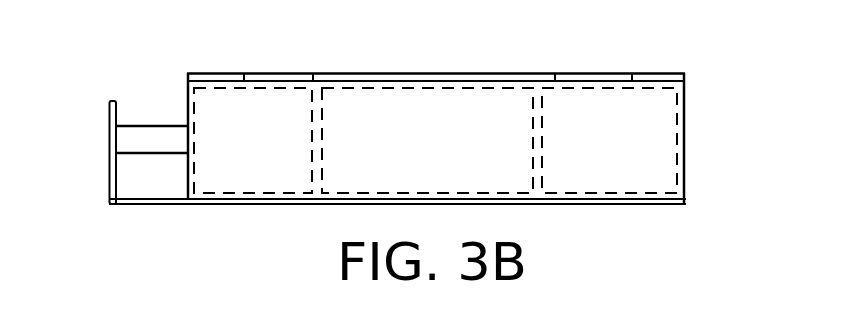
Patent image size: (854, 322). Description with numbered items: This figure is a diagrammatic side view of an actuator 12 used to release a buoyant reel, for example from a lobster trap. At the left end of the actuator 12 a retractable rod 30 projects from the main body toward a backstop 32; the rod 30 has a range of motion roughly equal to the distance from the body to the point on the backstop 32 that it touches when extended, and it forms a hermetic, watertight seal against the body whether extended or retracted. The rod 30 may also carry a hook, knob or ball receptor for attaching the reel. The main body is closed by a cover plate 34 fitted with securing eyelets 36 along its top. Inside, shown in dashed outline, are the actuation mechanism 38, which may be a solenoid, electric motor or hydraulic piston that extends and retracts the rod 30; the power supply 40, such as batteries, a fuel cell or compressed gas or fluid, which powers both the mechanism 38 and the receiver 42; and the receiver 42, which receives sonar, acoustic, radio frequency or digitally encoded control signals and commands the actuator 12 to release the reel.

The actuator 12 is at (186, 231).
The retractable rod 30 is at (138, 124).
The backstop 32 is at (108, 117).
The cover plate 34 is at (683, 75).
The securing eyelets 36 is at (620, 75).
The actuation mechanism 38 is at (246, 162).
The power supply 40 is at (470, 163).
The receiver 42 is at (645, 162).